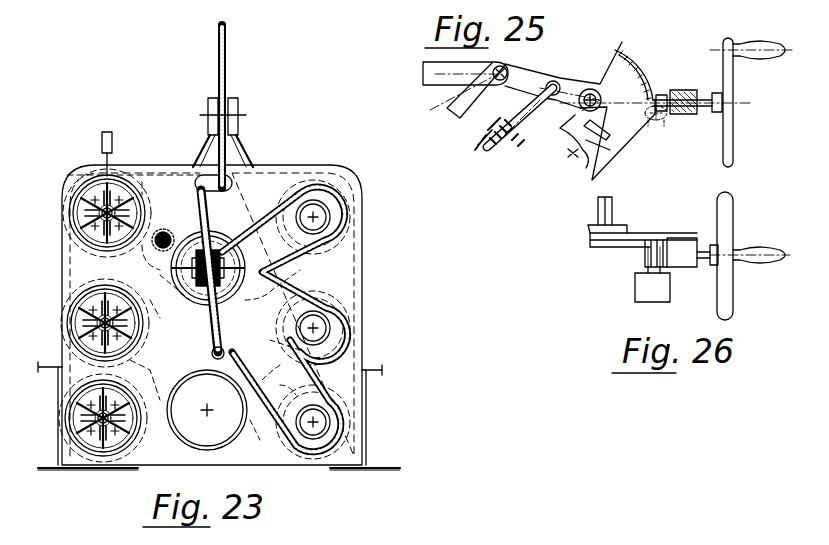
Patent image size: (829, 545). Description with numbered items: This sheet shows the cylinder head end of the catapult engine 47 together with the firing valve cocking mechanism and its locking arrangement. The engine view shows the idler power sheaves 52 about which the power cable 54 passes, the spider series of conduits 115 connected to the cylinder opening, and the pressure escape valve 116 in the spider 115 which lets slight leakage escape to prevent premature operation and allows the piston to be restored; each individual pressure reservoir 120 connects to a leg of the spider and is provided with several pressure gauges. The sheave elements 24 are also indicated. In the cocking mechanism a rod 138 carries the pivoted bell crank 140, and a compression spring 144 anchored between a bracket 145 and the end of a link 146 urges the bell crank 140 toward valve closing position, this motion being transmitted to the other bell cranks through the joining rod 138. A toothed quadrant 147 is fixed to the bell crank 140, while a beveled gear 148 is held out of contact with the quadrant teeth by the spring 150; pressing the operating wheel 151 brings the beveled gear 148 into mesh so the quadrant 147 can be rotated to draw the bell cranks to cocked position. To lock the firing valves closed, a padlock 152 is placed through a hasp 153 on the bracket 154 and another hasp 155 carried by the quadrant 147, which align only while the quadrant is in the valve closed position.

In FIG. 23, the wheel 24 is at (72, 188).
In FIG. 23, the catapult engine 47 is at (228, 224).
In FIG. 23, the idler power sheaves 52 is at (229, 65).
In FIG. 23, the power cable 54 is at (227, 30).
In FIG. 23, the spider series of conduits 115 is at (199, 283).
In FIG. 23, the pressure escape valve 116 is at (163, 230).
In FIG. 23, the pressure reservoir 120 is at (345, 243).
In FIG. 25, the rod 138 is at (447, 96).
In FIG. 25, the bell crank 140 is at (525, 72).
In FIG. 25, the compression spring 144 is at (490, 130).
In FIG. 25, the bracket 145 is at (520, 145).
In FIG. 25, the link 146 is at (495, 150).
In FIG. 25, the toothed quadrant 147 is at (612, 52).
In FIG. 25, the beveled gear 148 is at (661, 94).
In FIG. 25, the spring 150 is at (686, 115).
In FIG. 25, the operating wheel 151 is at (733, 136).
In FIG. 26, the operating wheel 151 is at (725, 295).
In FIG. 26, the padlock 152 is at (635, 290).
In FIG. 26, the hasp 153 is at (678, 240).
In FIG. 26, the bracket 154 is at (662, 232).
In FIG. 26, the hasp 155 is at (643, 254).